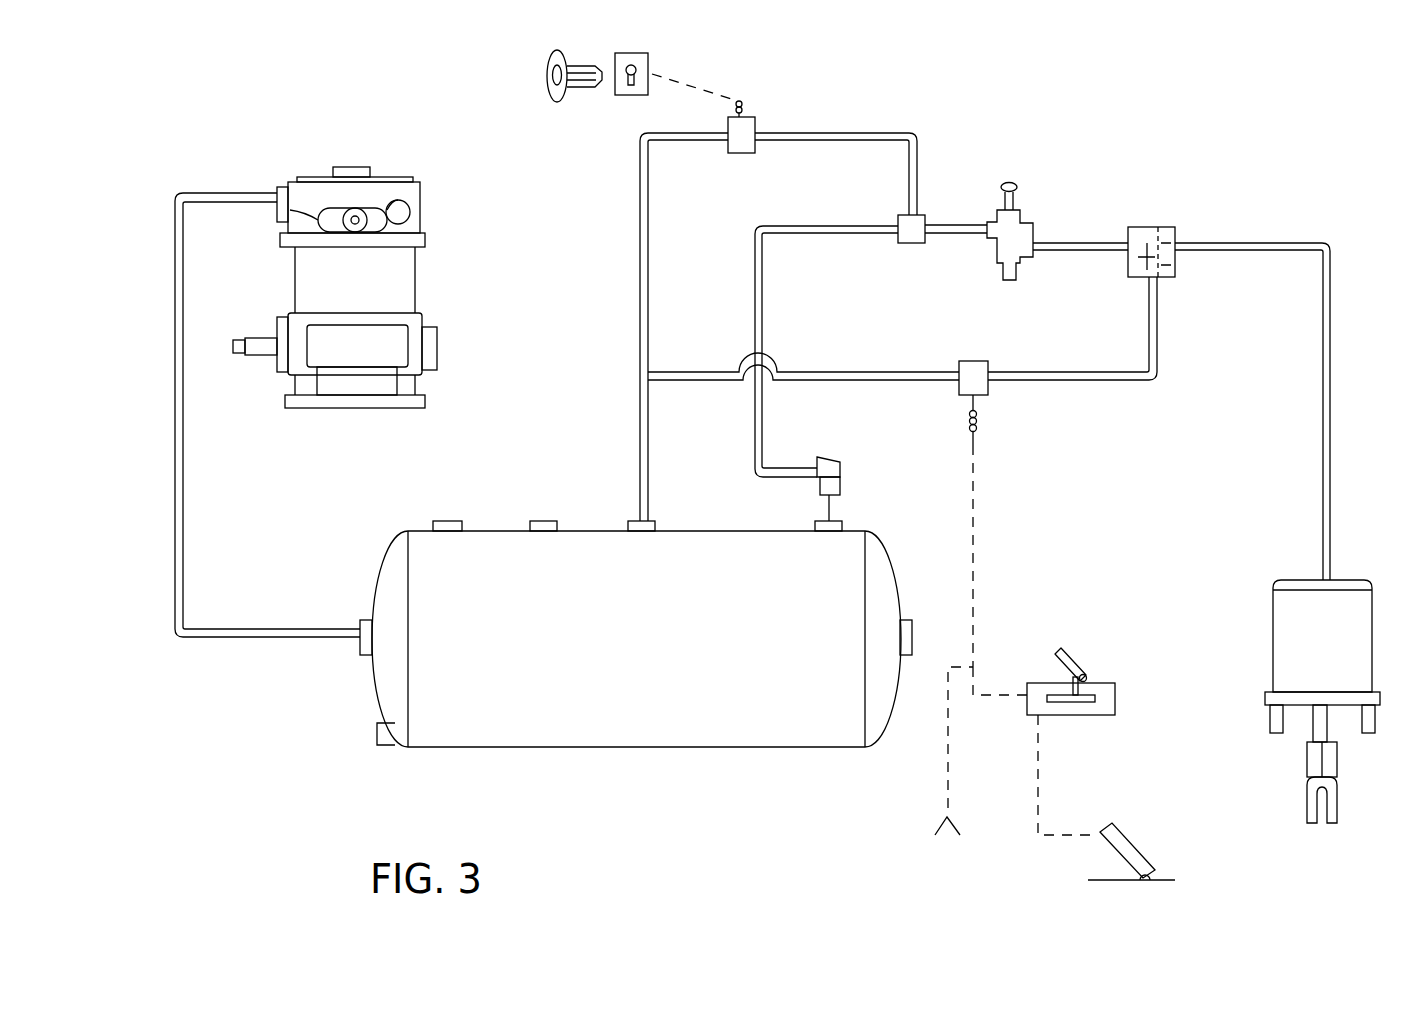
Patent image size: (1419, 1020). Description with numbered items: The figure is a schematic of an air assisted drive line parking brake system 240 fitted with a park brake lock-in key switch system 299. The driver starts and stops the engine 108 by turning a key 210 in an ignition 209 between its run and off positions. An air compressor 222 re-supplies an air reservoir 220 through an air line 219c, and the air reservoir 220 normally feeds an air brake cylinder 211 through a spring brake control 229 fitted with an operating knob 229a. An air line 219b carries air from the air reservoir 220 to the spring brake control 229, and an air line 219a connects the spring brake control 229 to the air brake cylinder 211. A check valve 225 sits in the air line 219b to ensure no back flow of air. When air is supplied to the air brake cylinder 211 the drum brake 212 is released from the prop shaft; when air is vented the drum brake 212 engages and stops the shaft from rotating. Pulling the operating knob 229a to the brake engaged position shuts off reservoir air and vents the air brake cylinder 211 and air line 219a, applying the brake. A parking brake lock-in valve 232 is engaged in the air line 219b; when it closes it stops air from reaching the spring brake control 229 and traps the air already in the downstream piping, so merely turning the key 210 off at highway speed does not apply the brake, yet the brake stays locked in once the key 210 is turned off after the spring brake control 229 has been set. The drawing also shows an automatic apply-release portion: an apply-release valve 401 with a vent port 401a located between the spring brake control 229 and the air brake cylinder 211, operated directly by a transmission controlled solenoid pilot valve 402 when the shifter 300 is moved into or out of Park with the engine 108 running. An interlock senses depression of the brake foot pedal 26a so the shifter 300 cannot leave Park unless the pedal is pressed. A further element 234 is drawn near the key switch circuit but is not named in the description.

The brake foot pedal 26a is at (1128, 832).
The engine 108 is at (948, 866).
The ignition 209 is at (652, 57).
The key 210 is at (546, 92).
The air brake cylinder 211 is at (1280, 582).
The drum brake 212 is at (1305, 804).
The air line 219a is at (1283, 240).
The air line 219b is at (752, 274).
The air line 219c is at (183, 425).
The air reservoir 220 is at (501, 524).
The air compressor 222 is at (418, 297).
The check valve 225 is at (844, 475).
The spring brake control 229 is at (1054, 215).
The operating knob 229a is at (1019, 189).
The parking brake lock-in valve 232 is at (910, 247).
The solenoid valve 234 is at (758, 114).
The air assisted drive line parking brake system 240 is at (1126, 521).
The park brake lock-in key switch system 299 is at (828, 192).
The shifter 300 is at (1079, 694).
The apply-release valve 401 is at (1196, 227).
The vent port 401a is at (1152, 224).
The transmission controlled solenoid pilot valve 402 is at (1028, 391).